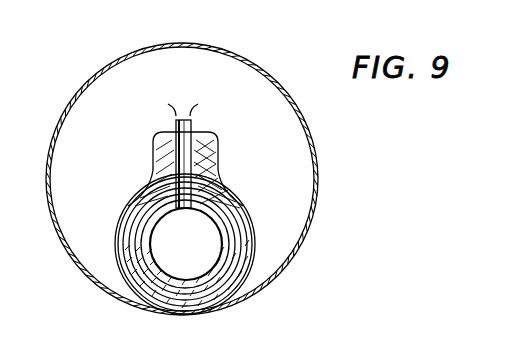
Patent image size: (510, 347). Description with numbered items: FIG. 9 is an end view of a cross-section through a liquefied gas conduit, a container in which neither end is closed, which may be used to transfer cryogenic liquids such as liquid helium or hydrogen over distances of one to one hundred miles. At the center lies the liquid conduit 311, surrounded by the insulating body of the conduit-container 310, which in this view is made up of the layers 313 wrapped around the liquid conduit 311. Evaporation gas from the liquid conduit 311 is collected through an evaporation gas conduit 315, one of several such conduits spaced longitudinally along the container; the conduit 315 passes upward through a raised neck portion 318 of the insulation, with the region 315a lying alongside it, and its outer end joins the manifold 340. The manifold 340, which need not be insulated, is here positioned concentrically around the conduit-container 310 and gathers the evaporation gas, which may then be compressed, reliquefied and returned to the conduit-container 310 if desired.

The manifold 340 is at (246, 74).
The conduit-container 310 is at (120, 292).
The windings 313 is at (144, 190).
The liquid conduit 311 is at (164, 228).
The evaporation gas conduit 315 is at (194, 122).
The tube outlet 315a is at (216, 152).
The neck portion 318 is at (223, 213).